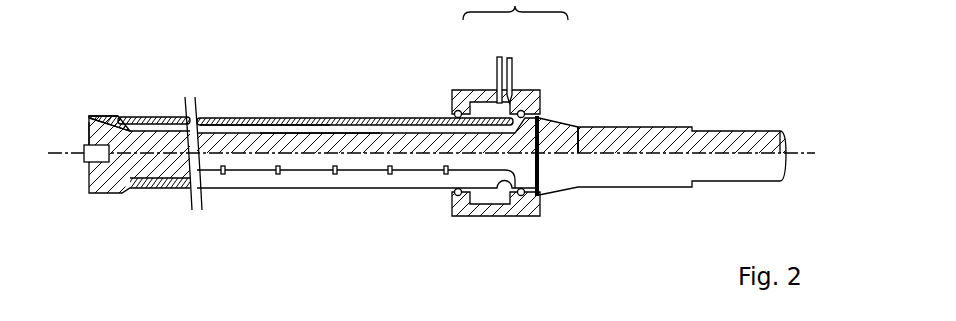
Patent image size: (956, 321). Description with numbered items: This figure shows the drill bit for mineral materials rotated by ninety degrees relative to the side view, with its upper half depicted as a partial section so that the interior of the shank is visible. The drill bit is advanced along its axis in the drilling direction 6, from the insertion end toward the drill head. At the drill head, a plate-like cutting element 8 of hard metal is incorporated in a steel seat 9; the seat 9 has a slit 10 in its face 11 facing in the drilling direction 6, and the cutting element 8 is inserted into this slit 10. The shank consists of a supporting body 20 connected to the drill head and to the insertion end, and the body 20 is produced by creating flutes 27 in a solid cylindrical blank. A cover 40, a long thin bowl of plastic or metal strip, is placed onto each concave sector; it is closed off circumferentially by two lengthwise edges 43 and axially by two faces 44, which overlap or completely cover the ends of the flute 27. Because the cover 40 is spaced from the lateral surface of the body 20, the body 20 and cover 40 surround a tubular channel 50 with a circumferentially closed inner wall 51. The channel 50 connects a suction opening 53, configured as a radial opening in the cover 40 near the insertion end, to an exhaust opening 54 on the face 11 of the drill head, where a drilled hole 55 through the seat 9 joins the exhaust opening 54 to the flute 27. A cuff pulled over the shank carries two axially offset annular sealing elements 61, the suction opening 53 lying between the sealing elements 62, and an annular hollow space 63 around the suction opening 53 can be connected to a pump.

The drilling direction 6 is at (159, 6).
The cutting element 8 is at (85, 151).
The seat 9 is at (87, 130).
The slit 10 is at (97, 163).
The face 11 is at (87, 138).
The supporting body 20 is at (418, 120).
The flute 27 is at (268, 127).
The cover 40 is at (400, 143).
The lengthwise edges 43 is at (390, 174).
The faces 44 is at (163, 188).
The channel 50 is at (290, 127).
The inner wall 51 is at (346, 128).
The suction opening 53 is at (534, 118).
The exhaust opening 54 is at (121, 121).
The drilled hole 55 is at (146, 130).
The annular sealing elements 61 is at (483, 112).
The sealing elements 62 is at (499, 57).
The hollow space 63 is at (528, 72).